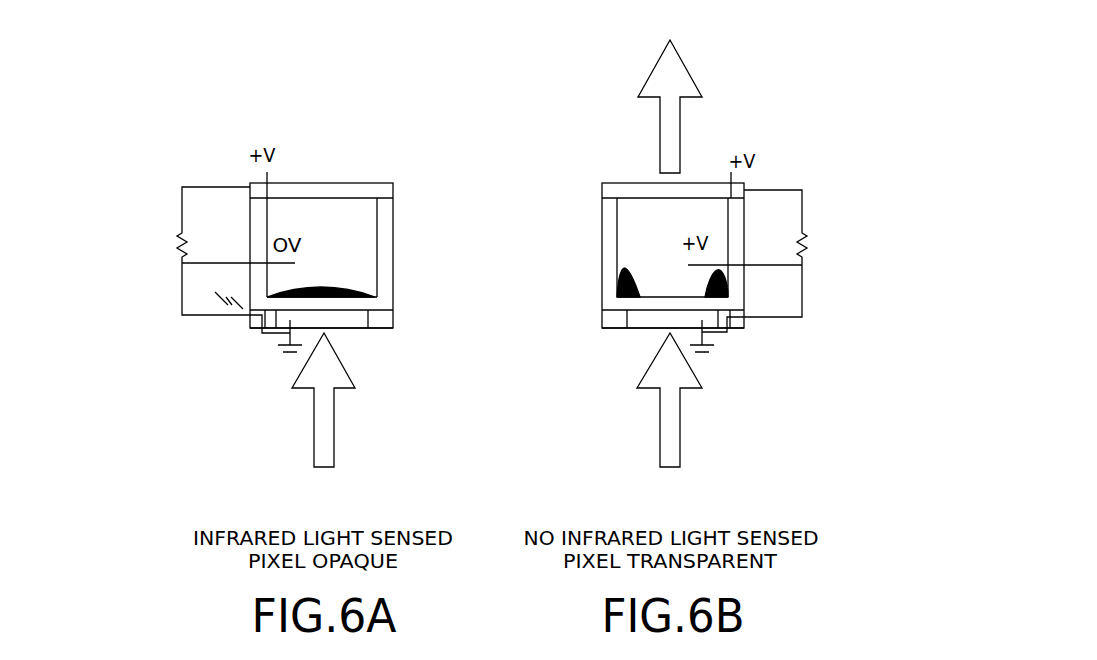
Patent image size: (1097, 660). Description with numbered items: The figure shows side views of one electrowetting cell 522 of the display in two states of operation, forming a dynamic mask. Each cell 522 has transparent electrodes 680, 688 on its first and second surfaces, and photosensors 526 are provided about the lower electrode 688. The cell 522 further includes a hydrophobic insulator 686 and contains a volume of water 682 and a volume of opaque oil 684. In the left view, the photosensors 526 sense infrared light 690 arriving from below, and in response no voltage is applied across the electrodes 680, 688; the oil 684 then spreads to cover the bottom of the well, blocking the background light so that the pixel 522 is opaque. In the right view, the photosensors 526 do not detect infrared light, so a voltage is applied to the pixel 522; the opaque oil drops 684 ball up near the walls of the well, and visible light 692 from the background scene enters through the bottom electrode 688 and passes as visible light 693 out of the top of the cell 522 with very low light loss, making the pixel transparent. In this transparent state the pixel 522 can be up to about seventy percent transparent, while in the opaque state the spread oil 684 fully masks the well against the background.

In FIG. 6A, the cell 522 is at (173, 370).
In FIG. 6B, the cell 522 is at (781, 70).
In FIG. 6A, the photosensor 526 is at (383, 318).
In FIG. 6B, the photosensor 526 is at (578, 337).
In FIG. 6A, the transparent electrode 680 is at (370, 183).
In FIG. 6A, the water 682 is at (630, 215).
In FIG. 6B, the water 682 is at (672, 247).
In FIG. 6A, the oil 684 is at (360, 287).
In FIG. 6B, the oil 684 is at (620, 268).
In FIG. 6A, the hydrophobic insulator 686 is at (377, 307).
In FIG. 6B, the hydrophobic insulator 686 is at (618, 306).
In FIG. 6A, the transparent electrode 688 is at (338, 317).
In FIG. 6A, the infrared light 690 is at (314, 430).
In FIG. 6B, the visible light 692 is at (680, 418).
In FIG. 6B, the visible light 693 is at (680, 123).